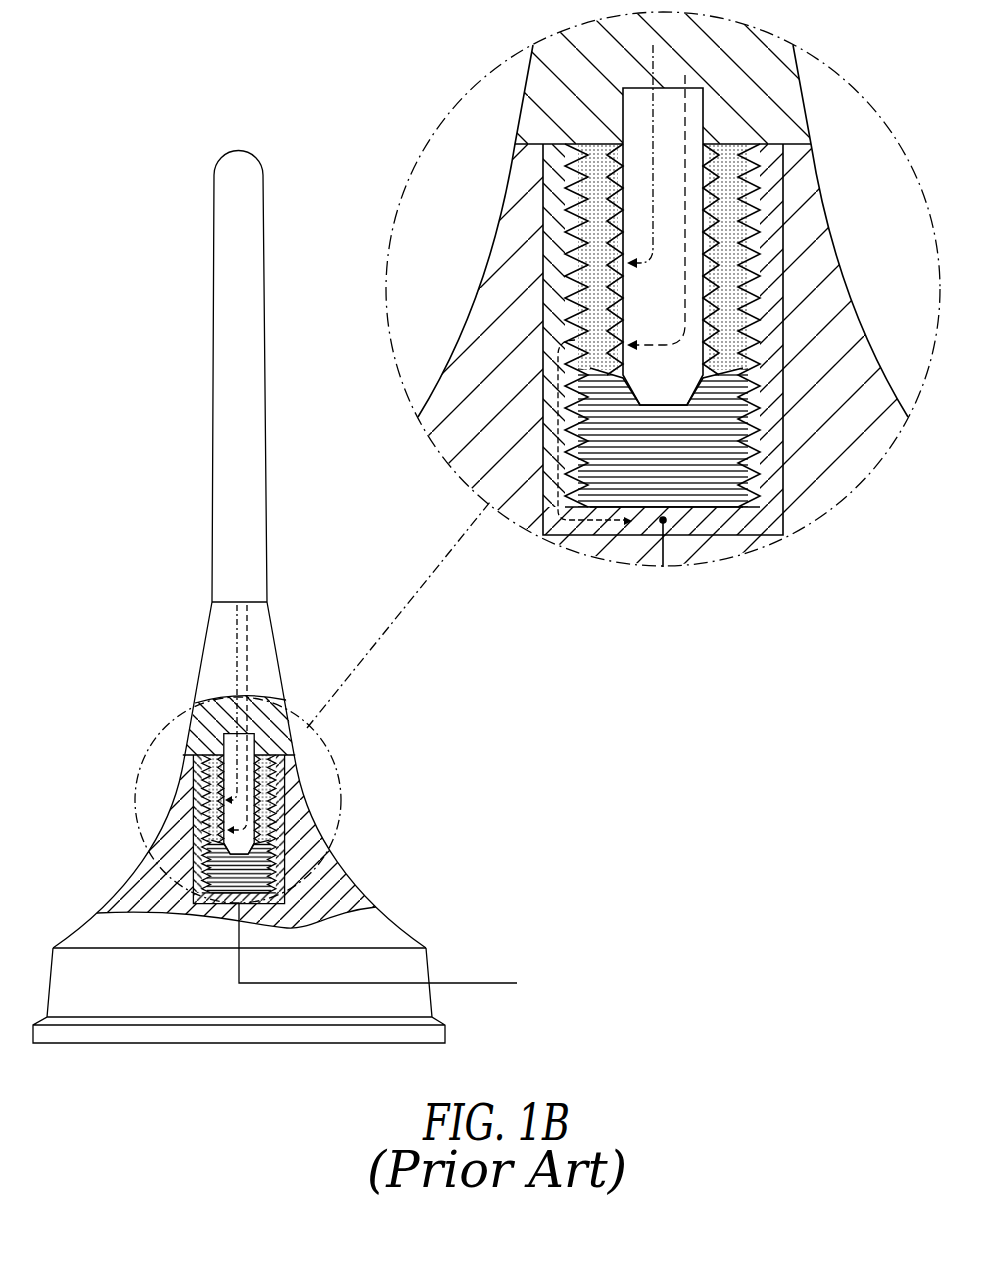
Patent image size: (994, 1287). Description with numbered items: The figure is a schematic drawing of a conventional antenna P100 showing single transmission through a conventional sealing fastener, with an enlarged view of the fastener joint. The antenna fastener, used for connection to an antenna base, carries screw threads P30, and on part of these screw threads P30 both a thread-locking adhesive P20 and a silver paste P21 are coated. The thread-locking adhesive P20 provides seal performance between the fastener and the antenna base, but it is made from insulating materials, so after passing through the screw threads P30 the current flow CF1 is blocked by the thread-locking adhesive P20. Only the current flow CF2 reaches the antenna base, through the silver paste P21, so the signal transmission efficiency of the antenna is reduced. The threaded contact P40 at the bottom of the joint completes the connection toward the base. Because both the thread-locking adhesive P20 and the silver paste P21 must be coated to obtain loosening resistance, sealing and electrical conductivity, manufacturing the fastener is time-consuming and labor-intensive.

The prior art antenna P100 is at (102, 112).
The thread-locking adhesive P20 is at (730, 193).
The screw threads P30 is at (718, 240).
The silver paste P21 is at (737, 338).
The threaded contact / screw P40 is at (740, 510).
The current flow CF1 is at (170, 652).
The current flow CF2 is at (247, 626).